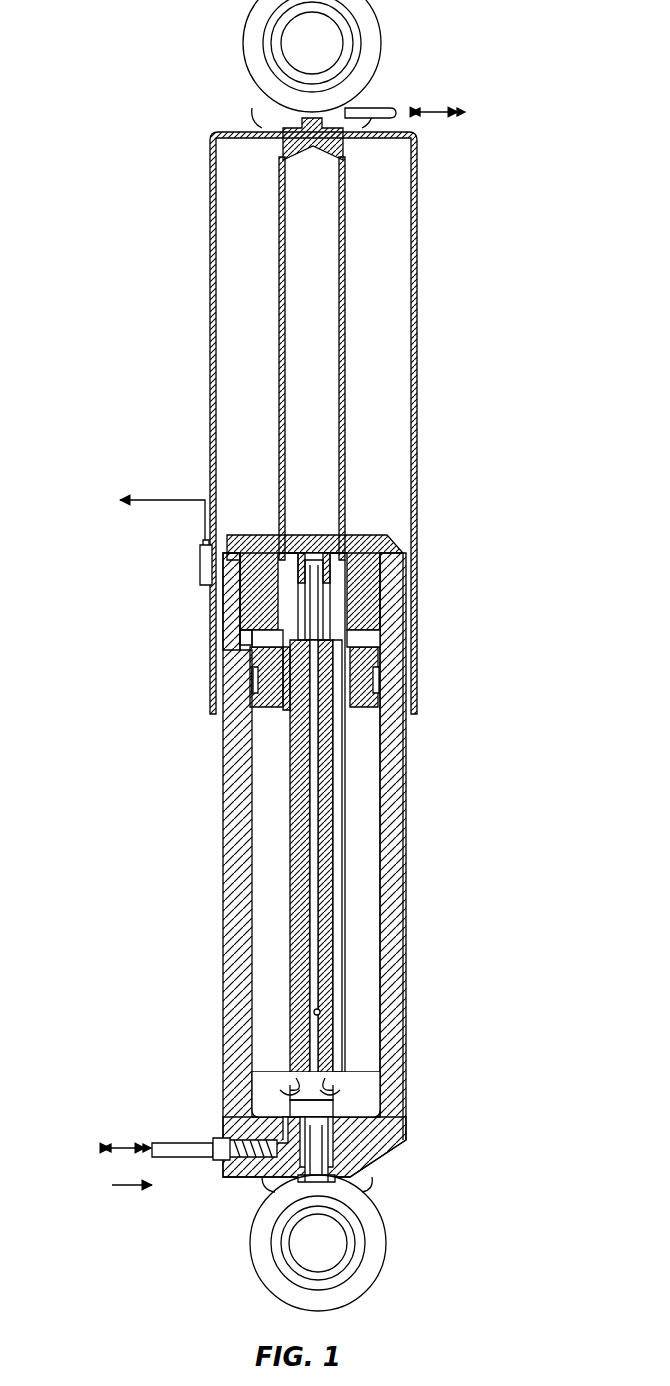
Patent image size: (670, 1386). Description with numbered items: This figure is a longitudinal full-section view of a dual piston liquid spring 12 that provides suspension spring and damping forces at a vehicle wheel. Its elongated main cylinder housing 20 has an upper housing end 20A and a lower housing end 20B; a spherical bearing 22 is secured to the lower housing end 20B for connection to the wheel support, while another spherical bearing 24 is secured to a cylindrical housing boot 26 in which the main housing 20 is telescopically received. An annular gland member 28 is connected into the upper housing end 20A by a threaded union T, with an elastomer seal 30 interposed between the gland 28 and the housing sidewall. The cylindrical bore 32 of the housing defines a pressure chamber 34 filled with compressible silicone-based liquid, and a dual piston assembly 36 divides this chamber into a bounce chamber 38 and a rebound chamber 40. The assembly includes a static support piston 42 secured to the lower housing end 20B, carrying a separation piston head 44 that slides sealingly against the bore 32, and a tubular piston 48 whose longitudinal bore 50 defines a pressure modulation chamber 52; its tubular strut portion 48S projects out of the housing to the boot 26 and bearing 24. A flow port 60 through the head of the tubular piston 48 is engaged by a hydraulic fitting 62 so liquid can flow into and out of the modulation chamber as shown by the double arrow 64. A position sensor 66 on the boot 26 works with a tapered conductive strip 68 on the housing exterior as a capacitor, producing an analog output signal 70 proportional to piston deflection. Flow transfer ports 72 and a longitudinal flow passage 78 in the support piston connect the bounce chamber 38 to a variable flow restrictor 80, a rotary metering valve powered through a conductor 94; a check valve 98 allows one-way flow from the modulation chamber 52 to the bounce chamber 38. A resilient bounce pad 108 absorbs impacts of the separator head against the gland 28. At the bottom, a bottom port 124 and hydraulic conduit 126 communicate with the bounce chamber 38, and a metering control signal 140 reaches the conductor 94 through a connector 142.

The dual piston liquid spring 12 is at (530, 203).
The main cylinder housing 20 is at (407, 866).
The upper housing end 20A is at (400, 590).
The lower housing end 20B is at (408, 1100).
The spherical bearing 22 is at (375, 1248).
The spherical bearing 24 is at (365, 35).
The cylindrical housing boot 26 is at (417, 373).
The annular gland member 28 is at (370, 540).
The elastomer seal 30 is at (385, 628).
The cylindrical bore 32 is at (378, 753).
The pressure chamber 34 is at (275, 933).
The dual piston assembly 36 is at (203, 673).
The bounce chamber 38 is at (368, 935).
The rebound chamber 40 is at (377, 650).
The static support piston 42 is at (338, 985).
The separation piston head 44 is at (380, 684).
The tubular piston 48 is at (282, 686).
The tubular strut portion 48S is at (345, 418).
The longitudinal bore 50 is at (285, 352).
The pressure modulation chamber 52 is at (328, 246).
The flow port 60 is at (312, 133).
The hydraulic fitting 62 is at (380, 108).
The double arrow 64 is at (445, 113).
The position sensor 66 is at (200, 575).
The tapered conductive strip 68 is at (226, 605).
The electrical analog output signal 70 is at (180, 500).
The flow transfer ports 72 is at (298, 1085).
The longitudinal flow passage 78 is at (320, 1012).
The variable flow restrictor 80 is at (250, 630).
The conductor 94 is at (333, 822).
The check valve 98 is at (318, 545).
The resilient bounce pad 108 is at (253, 678).
The bottom port 124 is at (235, 1185).
The hydraulic conduit 126 is at (190, 1143).
The D.C. metering control signal 140 is at (112, 1185).
The connector 142 is at (345, 1190).
The threaded union T is at (410, 573).